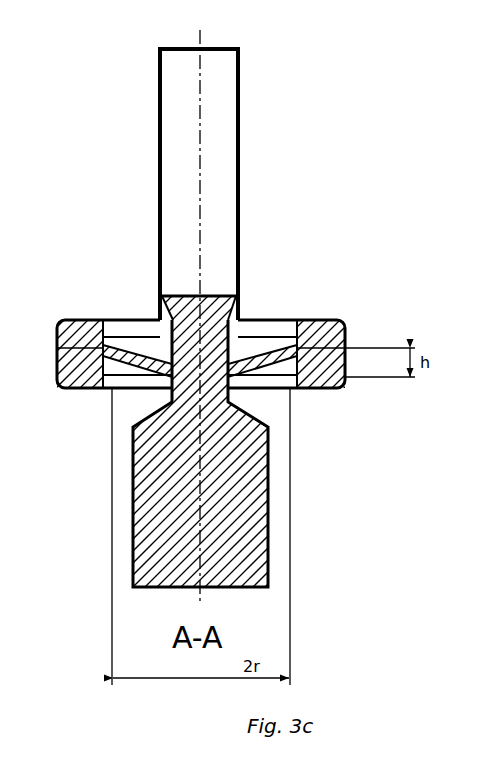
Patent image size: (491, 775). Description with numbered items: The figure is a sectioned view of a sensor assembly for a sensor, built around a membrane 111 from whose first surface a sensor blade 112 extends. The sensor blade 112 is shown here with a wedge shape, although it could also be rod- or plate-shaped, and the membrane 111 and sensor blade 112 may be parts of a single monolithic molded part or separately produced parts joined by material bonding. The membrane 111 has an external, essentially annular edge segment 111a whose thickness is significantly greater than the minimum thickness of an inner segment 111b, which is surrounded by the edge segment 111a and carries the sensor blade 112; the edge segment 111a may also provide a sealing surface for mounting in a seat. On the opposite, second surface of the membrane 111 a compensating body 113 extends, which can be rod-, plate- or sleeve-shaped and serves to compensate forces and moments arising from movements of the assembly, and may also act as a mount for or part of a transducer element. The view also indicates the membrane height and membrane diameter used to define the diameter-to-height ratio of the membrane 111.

The membrane 111 is at (245, 387).
The edge segment 111a is at (70, 320).
The inner segment 111b is at (128, 357).
The sensor blade 112 is at (218, 546).
The compensating body 113 is at (218, 141).